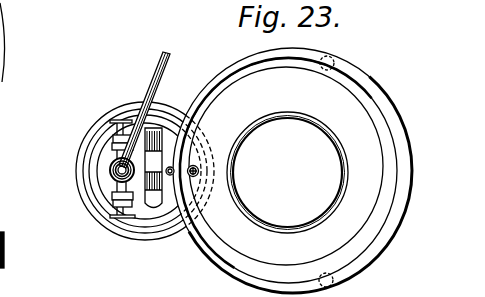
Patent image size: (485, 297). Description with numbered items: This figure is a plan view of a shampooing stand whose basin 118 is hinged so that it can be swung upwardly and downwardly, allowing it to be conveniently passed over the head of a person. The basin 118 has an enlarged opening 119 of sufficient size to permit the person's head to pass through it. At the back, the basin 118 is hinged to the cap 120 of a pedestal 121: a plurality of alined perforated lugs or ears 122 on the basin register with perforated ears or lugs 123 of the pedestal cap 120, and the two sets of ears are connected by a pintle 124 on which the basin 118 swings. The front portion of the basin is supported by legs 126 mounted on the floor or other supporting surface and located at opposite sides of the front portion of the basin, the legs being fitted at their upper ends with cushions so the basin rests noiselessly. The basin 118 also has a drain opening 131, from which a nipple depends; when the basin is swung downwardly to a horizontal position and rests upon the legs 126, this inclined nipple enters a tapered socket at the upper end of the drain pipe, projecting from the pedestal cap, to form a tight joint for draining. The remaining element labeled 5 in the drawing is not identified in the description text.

The arm 5 is at (153, 80).
The basin 118 is at (399, 219).
The enlarged opening 119 is at (287, 172).
The cap 120 is at (110, 184).
The pedestal 121 is at (78, 174).
The perforated lugs or ears 122 is at (162, 133).
The perforated ears or lugs 123 is at (147, 206).
The pintle 124 is at (157, 215).
The legs 126 is at (327, 70).
The drain opening 131 is at (196, 166).